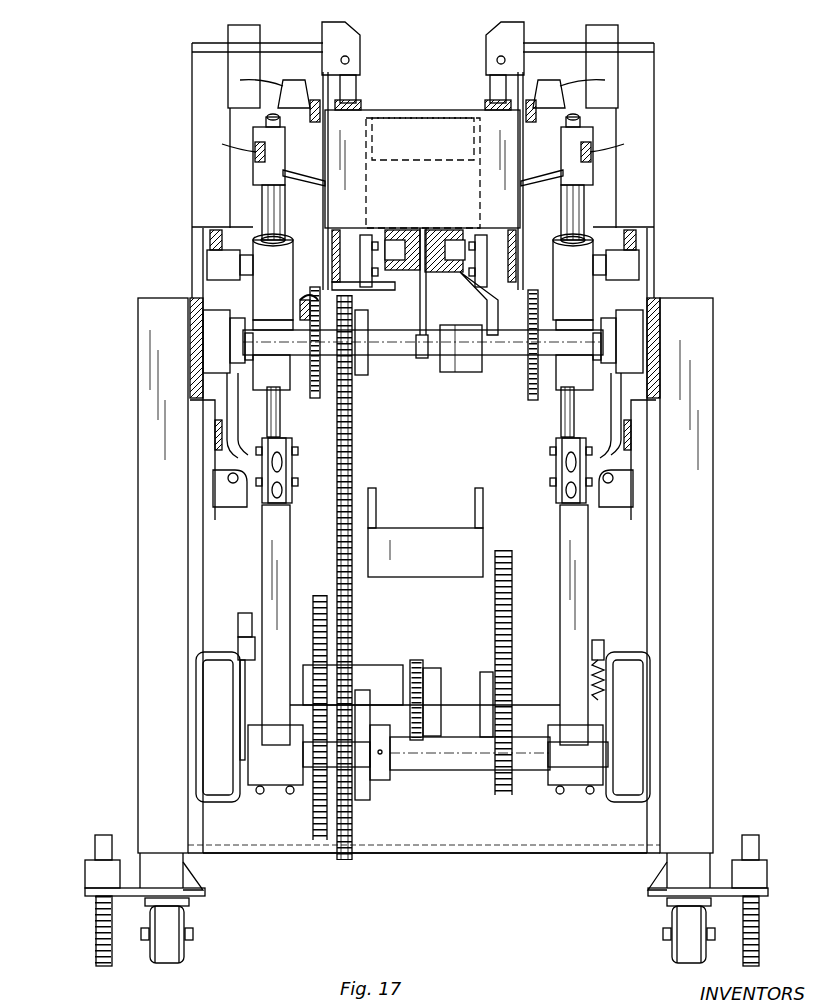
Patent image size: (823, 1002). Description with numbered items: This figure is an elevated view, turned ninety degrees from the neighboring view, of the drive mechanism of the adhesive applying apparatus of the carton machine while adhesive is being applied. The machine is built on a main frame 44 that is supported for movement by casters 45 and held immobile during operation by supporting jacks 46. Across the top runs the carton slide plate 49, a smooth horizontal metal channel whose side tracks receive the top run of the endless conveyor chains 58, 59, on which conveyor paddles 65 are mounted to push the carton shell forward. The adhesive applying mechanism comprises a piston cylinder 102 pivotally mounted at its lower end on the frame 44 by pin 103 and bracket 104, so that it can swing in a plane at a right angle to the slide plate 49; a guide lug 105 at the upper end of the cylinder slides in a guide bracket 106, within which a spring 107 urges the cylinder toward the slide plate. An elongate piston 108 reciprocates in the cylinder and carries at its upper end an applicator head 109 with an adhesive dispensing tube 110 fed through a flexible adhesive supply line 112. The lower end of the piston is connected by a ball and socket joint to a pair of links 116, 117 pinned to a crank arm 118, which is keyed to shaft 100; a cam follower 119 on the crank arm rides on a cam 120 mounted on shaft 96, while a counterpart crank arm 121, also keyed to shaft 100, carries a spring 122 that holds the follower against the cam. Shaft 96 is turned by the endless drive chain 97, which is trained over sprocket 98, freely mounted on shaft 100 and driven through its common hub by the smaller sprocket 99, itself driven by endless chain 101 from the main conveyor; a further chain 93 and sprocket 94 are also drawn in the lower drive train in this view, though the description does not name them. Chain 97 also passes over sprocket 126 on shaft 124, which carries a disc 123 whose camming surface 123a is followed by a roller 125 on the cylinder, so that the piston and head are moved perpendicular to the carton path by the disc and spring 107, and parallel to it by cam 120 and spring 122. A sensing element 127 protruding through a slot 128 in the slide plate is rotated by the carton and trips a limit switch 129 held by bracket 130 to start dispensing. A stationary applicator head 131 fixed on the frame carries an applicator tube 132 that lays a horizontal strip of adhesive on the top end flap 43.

The top end flap 43 is at (330, 97).
The main frame 44 is at (270, 862).
The casters 45 is at (188, 912).
The supporting jacks 46 is at (95, 948).
The carton slide plate 49 is at (420, 240).
The endless conveyor chain 58 is at (395, 240).
The endless conveyor chain 59 is at (458, 240).
The conveyor paddle 65 is at (418, 105).
The chain 93 is at (508, 628).
The sprocket 94 is at (487, 672).
The shaft 96 is at (460, 708).
The endless drive chain 97 is at (353, 628).
The sprocket 98 is at (365, 800).
The smaller sprocket 99 is at (306, 790).
The shaft 100 is at (405, 768).
The endless chain 101 is at (320, 600).
The piston cylinder 102 is at (290, 305).
The pin 103 is at (233, 478).
The bracket 104 is at (212, 482).
The guide lug 105 is at (248, 235).
The guide bracket 106 is at (222, 262).
The spring 107 is at (215, 240).
The elongate piston 108 is at (265, 195).
The applicator head 109 is at (258, 135).
The adhesive dispensing tube 110 is at (312, 180).
The flexible adhesive supply line 112 is at (222, 144).
The link 116 is at (262, 498).
The link 117 is at (290, 486).
The crank arm 118 is at (266, 565).
The cam follower 119 is at (240, 642).
The cam 120 is at (240, 618).
The crank arm 121 is at (582, 585).
The spring 122 is at (605, 672).
The disc 123 is at (322, 390).
The camming surface 123a is at (318, 325).
The shaft 124 is at (503, 357).
The roller 125 is at (320, 300).
The sprocket 126 is at (368, 370).
The sensing element 127 is at (426, 290).
The slot 128 is at (415, 278).
The limit switch 129 is at (465, 372).
The bracket 130 is at (478, 290).
The applicator head 131 is at (300, 100).
The applicator tube 132 is at (317, 83).